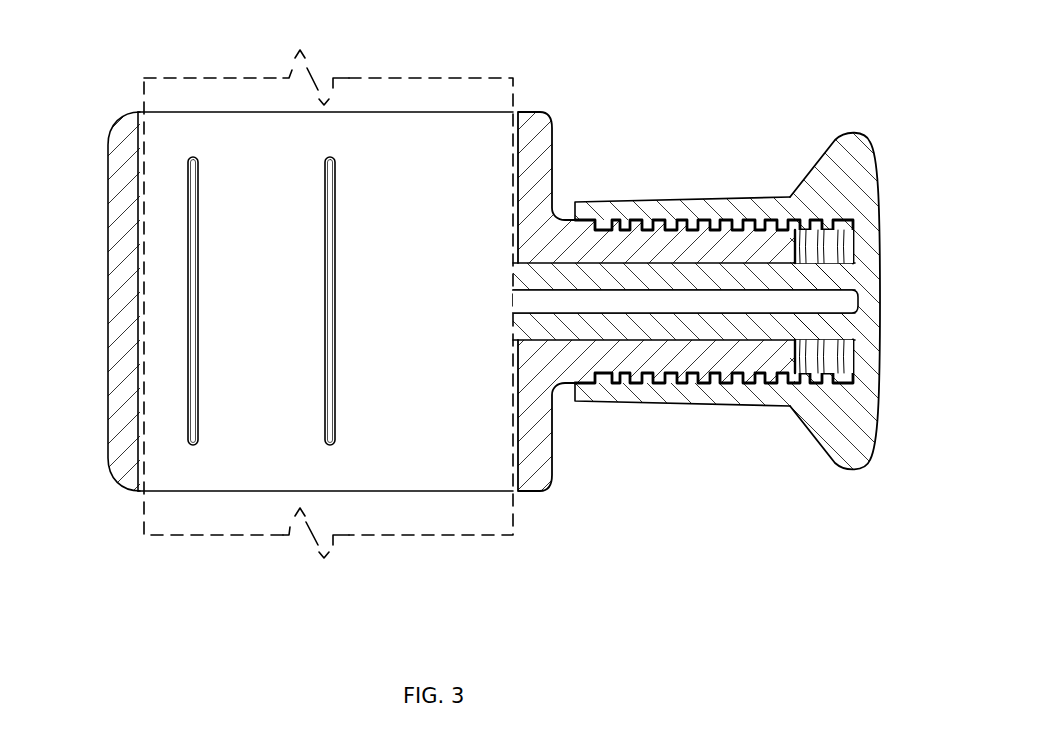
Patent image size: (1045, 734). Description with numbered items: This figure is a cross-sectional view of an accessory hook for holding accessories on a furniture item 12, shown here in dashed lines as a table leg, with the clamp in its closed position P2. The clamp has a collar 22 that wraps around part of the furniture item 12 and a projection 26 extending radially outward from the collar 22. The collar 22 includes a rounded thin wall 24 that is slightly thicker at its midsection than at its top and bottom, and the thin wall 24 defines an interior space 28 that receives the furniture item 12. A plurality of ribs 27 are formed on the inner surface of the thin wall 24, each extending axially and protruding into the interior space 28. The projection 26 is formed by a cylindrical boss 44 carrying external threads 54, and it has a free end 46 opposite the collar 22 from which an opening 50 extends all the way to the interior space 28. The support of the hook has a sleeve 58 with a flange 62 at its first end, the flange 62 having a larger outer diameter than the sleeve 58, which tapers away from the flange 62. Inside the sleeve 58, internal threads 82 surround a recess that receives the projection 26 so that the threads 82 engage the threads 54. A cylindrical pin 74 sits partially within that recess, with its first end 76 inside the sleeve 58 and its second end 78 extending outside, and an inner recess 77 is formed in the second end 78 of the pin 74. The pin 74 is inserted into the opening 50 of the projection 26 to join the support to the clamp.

The closed position P2 is at (733, 66).
The furniture item 12 is at (143, 512).
The collar 22 is at (118, 272).
The thin wall 24 is at (110, 180).
The projection 26 is at (631, 347).
The ribs 27 is at (190, 418).
The interior space 28 is at (358, 148).
The boss 44 is at (659, 222).
The free end 46 is at (805, 368).
The opening 50 is at (729, 263).
The threads 54 is at (747, 381).
The sleeve 58 is at (690, 197).
The flange 62 is at (833, 147).
The pin 74 is at (598, 320).
The first end 76 is at (857, 273).
The inner recess 77 is at (840, 302).
The second end 78 is at (515, 294).
The threads 82 is at (770, 230).